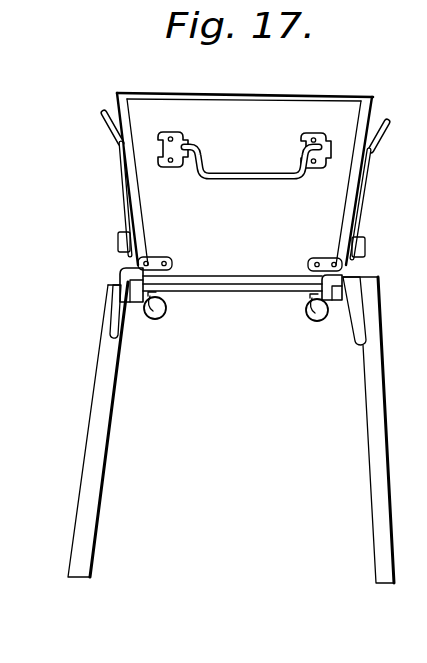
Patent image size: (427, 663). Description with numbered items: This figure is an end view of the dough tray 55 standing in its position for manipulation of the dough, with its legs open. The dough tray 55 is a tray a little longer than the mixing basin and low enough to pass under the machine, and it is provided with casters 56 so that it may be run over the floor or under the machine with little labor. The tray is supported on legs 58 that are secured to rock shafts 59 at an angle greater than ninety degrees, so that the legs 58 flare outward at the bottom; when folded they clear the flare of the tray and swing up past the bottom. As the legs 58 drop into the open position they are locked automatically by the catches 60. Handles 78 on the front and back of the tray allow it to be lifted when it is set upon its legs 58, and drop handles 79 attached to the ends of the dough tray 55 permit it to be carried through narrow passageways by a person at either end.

The dough tray 55 is at (245, 179).
The casters 56 is at (153, 314).
The legs 58 is at (97, 427).
The rock shafts 59 is at (229, 278).
The catches 60 is at (136, 258).
The handles 78 is at (100, 121).
The drop handles 79 is at (228, 172).